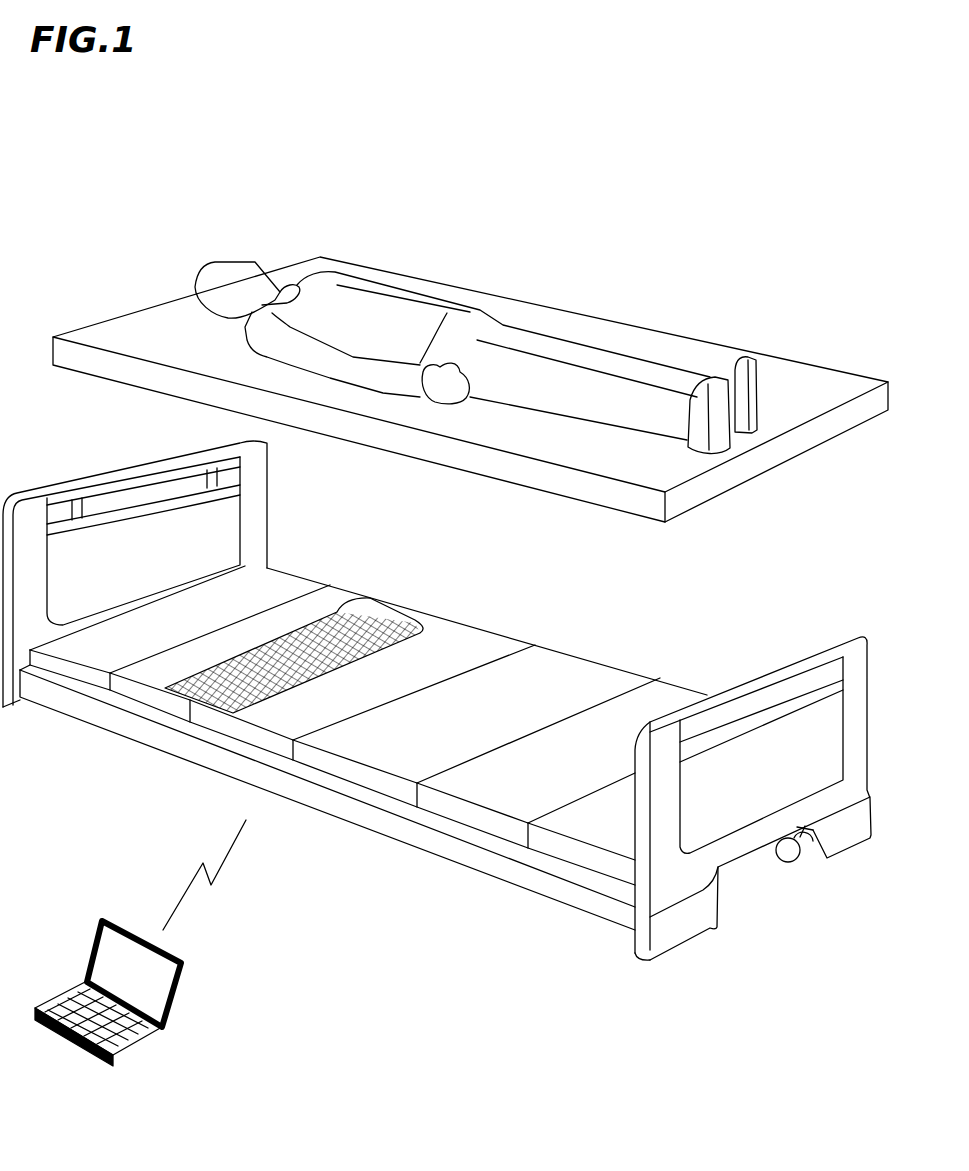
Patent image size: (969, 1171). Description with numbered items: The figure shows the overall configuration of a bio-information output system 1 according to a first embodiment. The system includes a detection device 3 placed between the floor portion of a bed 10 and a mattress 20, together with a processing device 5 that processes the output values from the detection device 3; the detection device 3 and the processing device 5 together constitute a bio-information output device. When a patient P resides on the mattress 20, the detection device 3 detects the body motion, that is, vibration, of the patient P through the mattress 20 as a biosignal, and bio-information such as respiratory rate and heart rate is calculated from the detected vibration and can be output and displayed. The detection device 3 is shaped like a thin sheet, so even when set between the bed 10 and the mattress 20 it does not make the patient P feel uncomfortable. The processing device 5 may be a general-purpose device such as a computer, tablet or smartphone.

The bio-information output system 1 is at (740, 148).
The patient P is at (508, 333).
The mattress 20 is at (773, 373).
The bed 10 is at (565, 887).
The detection device 3 is at (212, 710).
The processing device 5 is at (147, 1037).